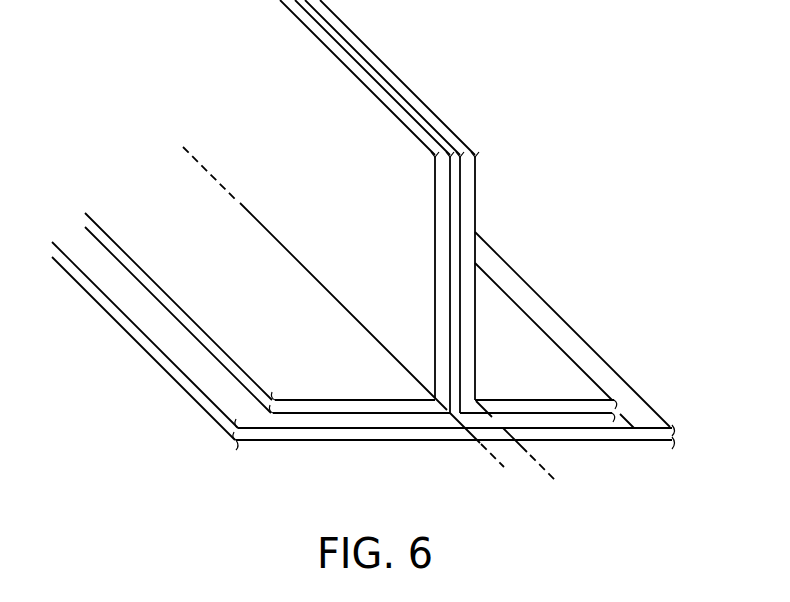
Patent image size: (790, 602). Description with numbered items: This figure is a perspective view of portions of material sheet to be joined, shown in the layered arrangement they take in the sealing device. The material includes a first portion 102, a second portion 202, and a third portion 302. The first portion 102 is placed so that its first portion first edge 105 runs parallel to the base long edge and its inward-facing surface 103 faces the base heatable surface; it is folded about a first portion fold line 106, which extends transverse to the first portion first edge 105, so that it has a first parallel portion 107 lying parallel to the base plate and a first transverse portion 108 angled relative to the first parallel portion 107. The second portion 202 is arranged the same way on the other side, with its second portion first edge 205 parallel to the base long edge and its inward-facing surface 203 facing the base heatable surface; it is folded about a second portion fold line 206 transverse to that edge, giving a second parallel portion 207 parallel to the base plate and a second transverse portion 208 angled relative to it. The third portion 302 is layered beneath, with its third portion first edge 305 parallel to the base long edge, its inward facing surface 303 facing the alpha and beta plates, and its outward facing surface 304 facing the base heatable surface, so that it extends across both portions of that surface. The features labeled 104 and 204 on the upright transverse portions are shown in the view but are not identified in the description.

The first portion 102 is at (265, 107).
The inward-facing surface 103 is at (450, 200).
The vertical member outer edge 104 is at (435, 200).
The first portion first edge 105 is at (302, 400).
The first portion fold line 106 is at (488, 476).
The first parallel portion 107 is at (147, 212).
The first transverse portion 108 is at (248, 28).
The second portion 202 is at (540, 347).
The inward-facing surface 203 is at (450, 245).
The vertical member right edge 204 is at (476, 223).
The second portion first edge 205 is at (585, 402).
The second portion fold line 206 is at (553, 476).
The second parallel portion 207 is at (577, 387).
The second transverse portion 208 is at (477, 320).
The third portion 302 is at (308, 429).
The inward facing surface 303 is at (138, 315).
The outward facing surface 304 is at (93, 302).
The third portion first edge 305 is at (258, 427).